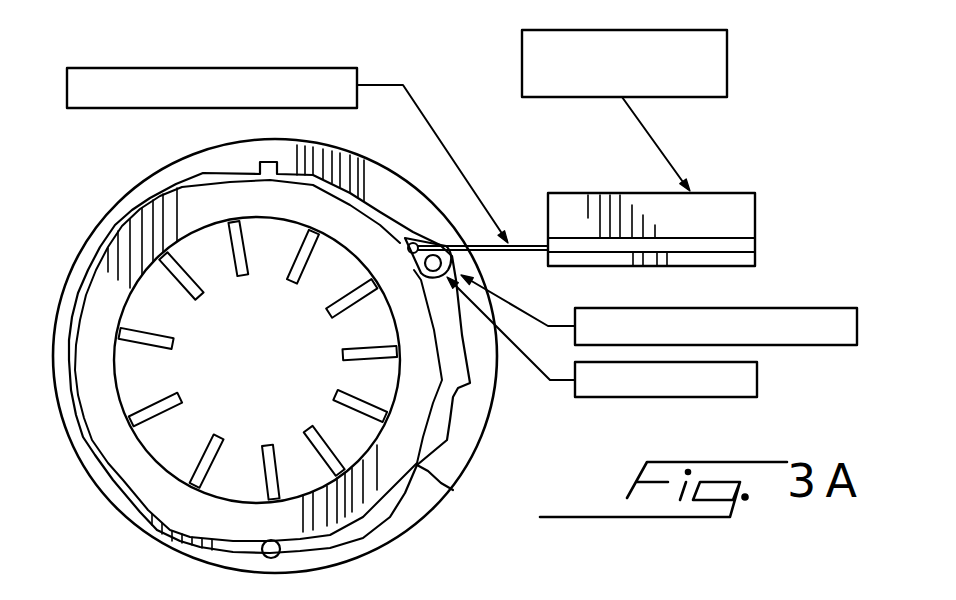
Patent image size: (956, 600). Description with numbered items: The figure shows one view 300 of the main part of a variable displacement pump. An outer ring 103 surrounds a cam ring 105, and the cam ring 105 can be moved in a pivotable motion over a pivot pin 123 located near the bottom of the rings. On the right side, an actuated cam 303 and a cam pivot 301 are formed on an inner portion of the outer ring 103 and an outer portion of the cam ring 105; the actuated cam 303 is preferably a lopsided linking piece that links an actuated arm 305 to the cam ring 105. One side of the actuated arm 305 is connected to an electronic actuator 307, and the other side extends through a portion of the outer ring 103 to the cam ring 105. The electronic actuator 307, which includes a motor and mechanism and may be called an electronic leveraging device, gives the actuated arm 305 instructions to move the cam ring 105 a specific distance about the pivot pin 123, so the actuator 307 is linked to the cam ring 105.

The view 300 is at (74, 189).
The outer ring 103 is at (485, 432).
The cam ring 105 is at (452, 488).
The pivot pin 123 is at (266, 543).
The actuated arm 305 is at (215, 68).
The electronic actuator 307 is at (727, 42).
The actuated cam 303 is at (785, 308).
The cam pivot 301 is at (757, 380).